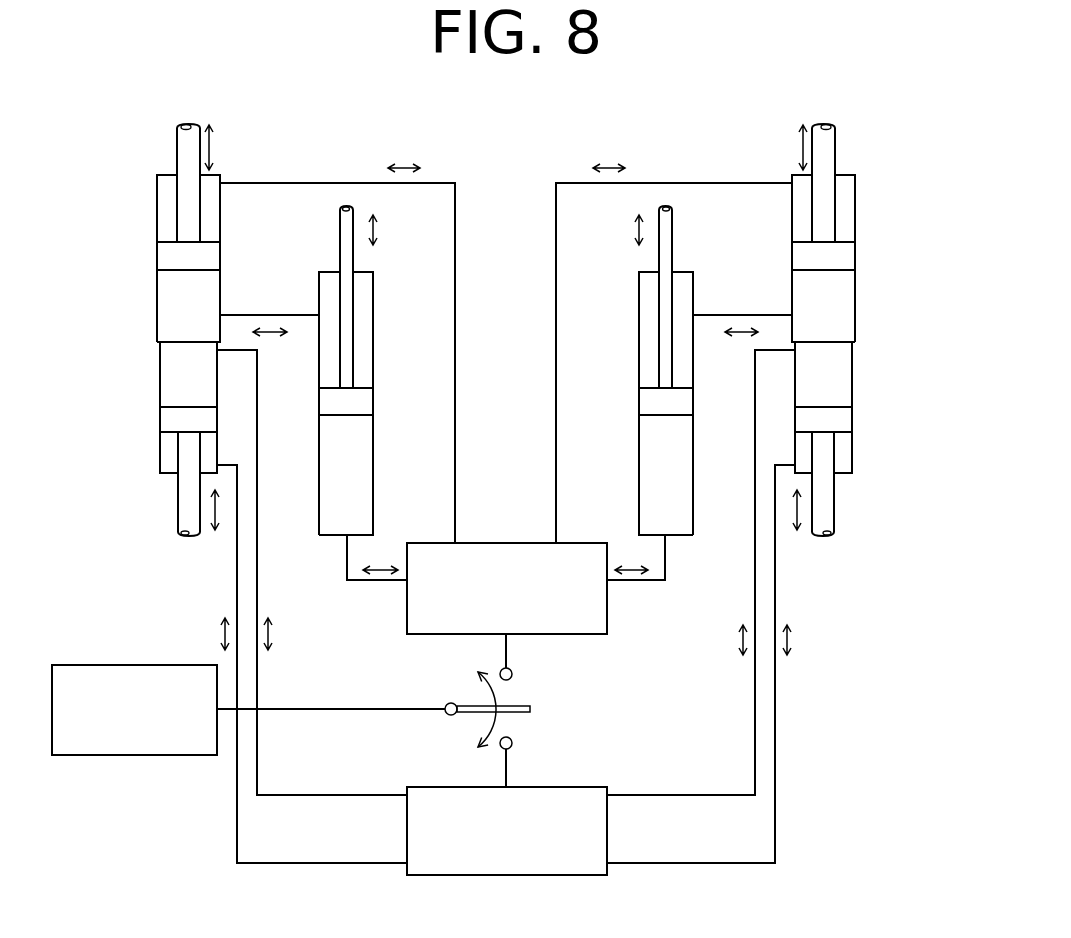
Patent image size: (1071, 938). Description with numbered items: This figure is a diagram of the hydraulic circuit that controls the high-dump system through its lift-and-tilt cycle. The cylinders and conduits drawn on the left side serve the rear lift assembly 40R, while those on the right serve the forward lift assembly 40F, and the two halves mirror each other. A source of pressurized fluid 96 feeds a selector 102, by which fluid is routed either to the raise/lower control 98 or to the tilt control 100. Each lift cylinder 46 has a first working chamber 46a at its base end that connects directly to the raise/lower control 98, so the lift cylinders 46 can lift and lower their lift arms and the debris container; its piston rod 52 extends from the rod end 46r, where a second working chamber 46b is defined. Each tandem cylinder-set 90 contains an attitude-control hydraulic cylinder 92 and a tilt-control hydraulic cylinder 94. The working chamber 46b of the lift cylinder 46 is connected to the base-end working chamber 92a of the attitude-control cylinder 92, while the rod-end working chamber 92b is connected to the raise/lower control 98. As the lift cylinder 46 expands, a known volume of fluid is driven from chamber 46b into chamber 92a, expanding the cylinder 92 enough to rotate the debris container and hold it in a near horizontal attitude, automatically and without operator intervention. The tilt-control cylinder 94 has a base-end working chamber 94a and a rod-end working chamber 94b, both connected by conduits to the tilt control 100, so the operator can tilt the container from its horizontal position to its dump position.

The rear lift assembly 40R is at (428, 110).
The forward lift assembly 40F is at (897, 110).
The tandem cylinder-set 90 is at (138, 188).
The attitude-control hydraulic cylinder 92 is at (148, 168).
The working chamber 92a is at (167, 319).
The working chamber 92b is at (205, 183).
The tilt-control hydraulic cylinder 94 is at (145, 466).
The working chamber 94a is at (167, 398).
The working chamber 94b is at (172, 476).
The lift cylinder 46 is at (309, 545).
The first working chamber 46a is at (325, 484).
The second working chamber 46b is at (326, 300).
The rod end 46r is at (380, 275).
The piston rod 52 is at (345, 217).
The source of pressurized fluid 96 is at (92, 757).
The raise/lower control 98 is at (433, 635).
The tilt control 100 is at (552, 787).
The selector 102 is at (573, 694).